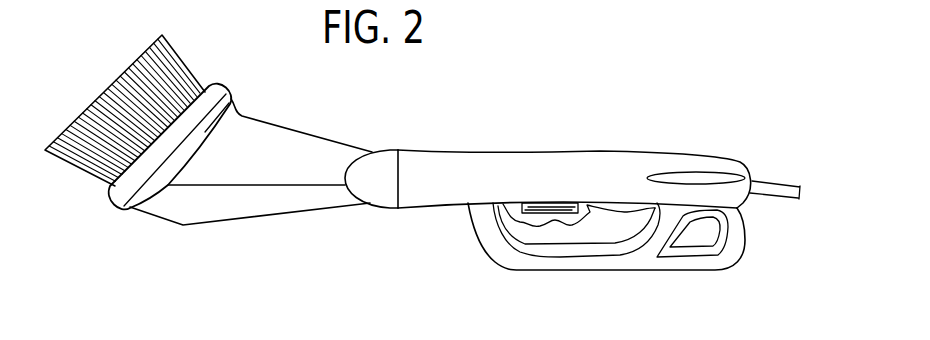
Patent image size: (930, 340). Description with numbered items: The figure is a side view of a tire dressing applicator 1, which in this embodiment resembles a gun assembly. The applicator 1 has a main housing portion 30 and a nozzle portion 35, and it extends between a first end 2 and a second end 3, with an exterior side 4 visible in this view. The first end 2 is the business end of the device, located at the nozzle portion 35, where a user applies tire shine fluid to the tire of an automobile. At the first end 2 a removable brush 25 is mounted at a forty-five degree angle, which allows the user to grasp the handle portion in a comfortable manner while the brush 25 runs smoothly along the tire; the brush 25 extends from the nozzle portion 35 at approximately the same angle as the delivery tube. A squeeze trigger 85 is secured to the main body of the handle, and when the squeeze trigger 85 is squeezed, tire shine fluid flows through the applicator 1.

The tire dressing applicator 1 is at (748, 97).
The first end 2 is at (107, 206).
The second end 3 is at (742, 158).
The exterior side 4 is at (447, 183).
The removable brush 25 is at (176, 72).
The main housing portion 30 is at (518, 152).
The nozzle portion 35 is at (275, 217).
The squeeze trigger 85 is at (550, 220).